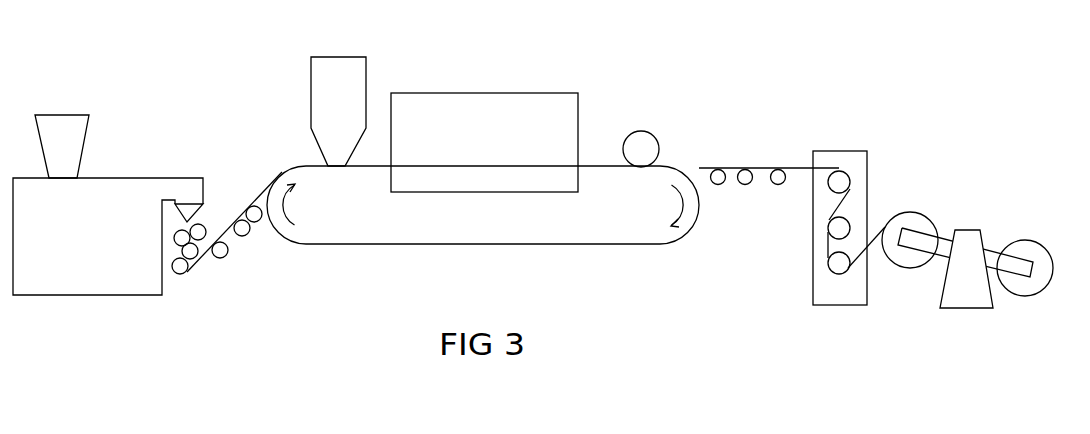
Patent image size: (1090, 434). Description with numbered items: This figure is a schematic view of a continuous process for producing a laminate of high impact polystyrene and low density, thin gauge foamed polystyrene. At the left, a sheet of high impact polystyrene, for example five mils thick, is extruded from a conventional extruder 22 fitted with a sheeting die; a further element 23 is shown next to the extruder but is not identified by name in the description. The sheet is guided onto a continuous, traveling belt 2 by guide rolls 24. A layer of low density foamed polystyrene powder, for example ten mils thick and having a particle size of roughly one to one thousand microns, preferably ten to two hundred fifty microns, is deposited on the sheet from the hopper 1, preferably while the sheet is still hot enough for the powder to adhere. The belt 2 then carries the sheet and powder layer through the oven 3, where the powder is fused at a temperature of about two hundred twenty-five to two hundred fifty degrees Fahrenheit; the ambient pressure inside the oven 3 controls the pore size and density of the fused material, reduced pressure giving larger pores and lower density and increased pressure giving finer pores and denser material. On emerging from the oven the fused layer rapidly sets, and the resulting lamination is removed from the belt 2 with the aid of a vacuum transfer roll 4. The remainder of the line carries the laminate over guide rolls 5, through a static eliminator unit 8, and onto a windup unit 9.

The hopper 1 is at (366, 83).
The continuous traveling belt 2 is at (450, 245).
The oven 3 is at (485, 93).
The vacuum transfer roll 4 is at (653, 133).
The guide rolls 5 is at (780, 183).
The static eliminator unit 8 is at (868, 185).
The windup unit 9 is at (967, 228).
The extruder 22 is at (98, 178).
The extruder nozzle with feed rollers 23 is at (203, 226).
The guide rolls 24 is at (246, 236).